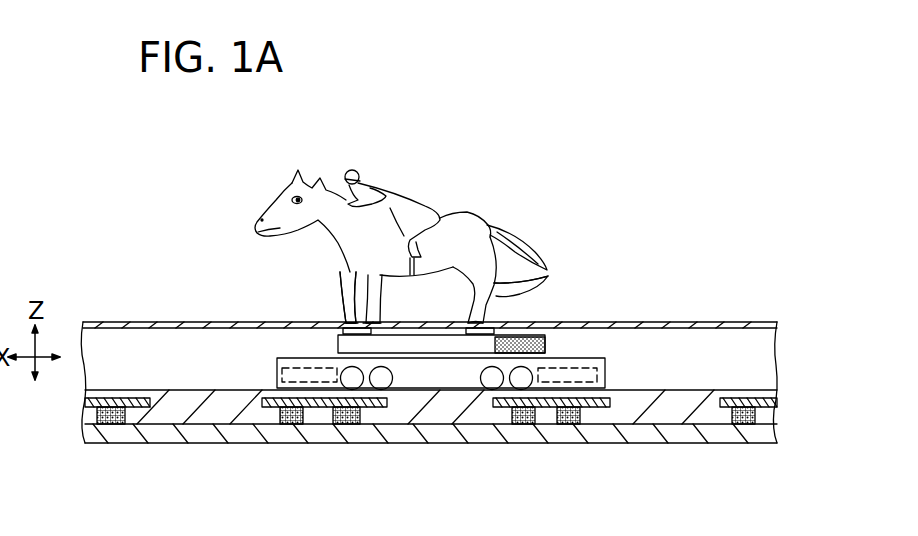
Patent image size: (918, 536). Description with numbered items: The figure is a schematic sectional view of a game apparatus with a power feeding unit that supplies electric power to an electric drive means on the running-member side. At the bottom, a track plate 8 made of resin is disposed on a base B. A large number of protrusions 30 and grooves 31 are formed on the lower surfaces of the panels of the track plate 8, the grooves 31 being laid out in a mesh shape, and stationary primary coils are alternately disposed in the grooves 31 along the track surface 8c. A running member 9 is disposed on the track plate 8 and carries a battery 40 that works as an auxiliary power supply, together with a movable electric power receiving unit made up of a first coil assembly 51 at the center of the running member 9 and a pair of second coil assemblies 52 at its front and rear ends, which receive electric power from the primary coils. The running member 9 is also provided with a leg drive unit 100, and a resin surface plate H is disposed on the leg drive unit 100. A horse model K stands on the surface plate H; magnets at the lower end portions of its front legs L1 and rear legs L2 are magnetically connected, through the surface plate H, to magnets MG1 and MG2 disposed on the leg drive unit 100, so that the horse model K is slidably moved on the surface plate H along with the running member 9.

The horse model K is at (488, 222).
The surface plate H is at (738, 321).
The front legs L1 is at (350, 292).
The rear legs L2 is at (548, 278).
The magnet MG1 is at (348, 326).
The magnet MG2 is at (484, 332).
The leg drive unit 100 is at (338, 345).
The battery 40 is at (545, 345).
The running member 9 is at (605, 358).
The second coil assemblies 52 is at (605, 380).
The track surface 8c is at (756, 390).
The track plate 8 is at (777, 401).
The base B is at (775, 440).
The protrusions 30 is at (663, 416).
The grooves 31 is at (733, 415).
The first coil assembly 51 is at (470, 386).